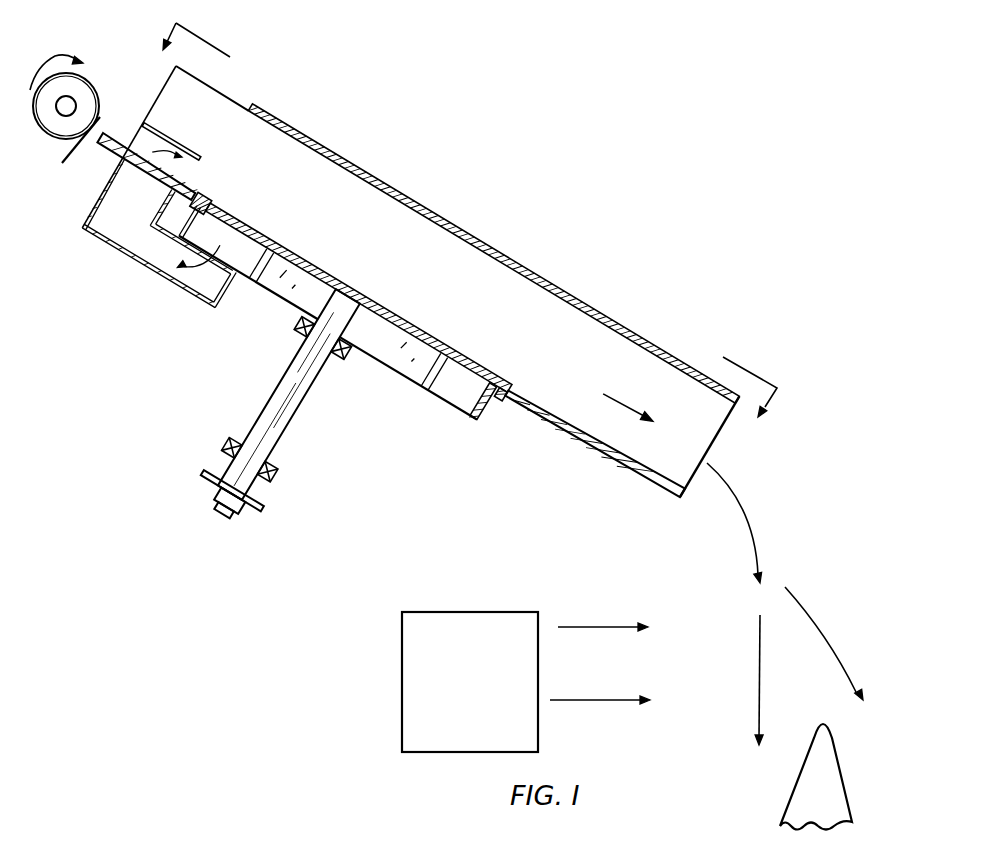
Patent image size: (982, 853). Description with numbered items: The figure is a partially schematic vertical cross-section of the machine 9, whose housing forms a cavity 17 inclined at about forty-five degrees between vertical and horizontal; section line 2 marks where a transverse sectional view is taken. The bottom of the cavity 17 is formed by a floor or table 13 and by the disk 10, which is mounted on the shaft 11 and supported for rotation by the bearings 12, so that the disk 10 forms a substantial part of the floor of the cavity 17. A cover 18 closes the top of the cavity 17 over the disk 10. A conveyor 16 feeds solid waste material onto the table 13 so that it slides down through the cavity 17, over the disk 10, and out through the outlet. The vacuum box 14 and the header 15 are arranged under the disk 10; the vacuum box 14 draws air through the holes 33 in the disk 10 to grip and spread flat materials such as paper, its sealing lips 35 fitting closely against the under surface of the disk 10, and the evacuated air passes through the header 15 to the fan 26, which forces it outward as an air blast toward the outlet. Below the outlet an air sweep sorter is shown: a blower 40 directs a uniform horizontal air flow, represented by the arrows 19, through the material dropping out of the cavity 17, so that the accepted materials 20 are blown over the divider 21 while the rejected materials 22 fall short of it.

The machine 9 is at (521, 216).
The section line 2- 2 is at (462, 232).
The disk 10 is at (436, 334).
The shaft 11 is at (296, 426).
The bearings 12 is at (297, 327).
The floor or table 13 is at (192, 186).
The vacuum box 14 is at (444, 409).
The header 15 is at (130, 258).
The conveyor 16 is at (27, 90).
The cavity 17 is at (339, 221).
The cover 18 is at (543, 276).
The arrows representing air flow 19 is at (588, 627).
The accepted materials 20 is at (881, 692).
The divider 21 is at (829, 804).
The rejected materials 22 is at (719, 762).
The fan 26 is at (183, 143).
The holes 33 is at (240, 214).
The sealing lips 35 is at (499, 405).
The blower 40 is at (465, 690).